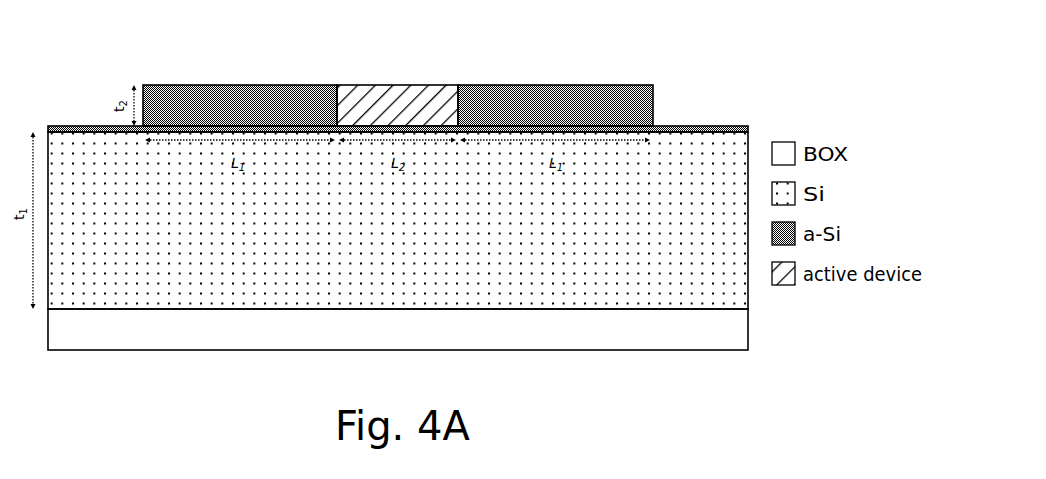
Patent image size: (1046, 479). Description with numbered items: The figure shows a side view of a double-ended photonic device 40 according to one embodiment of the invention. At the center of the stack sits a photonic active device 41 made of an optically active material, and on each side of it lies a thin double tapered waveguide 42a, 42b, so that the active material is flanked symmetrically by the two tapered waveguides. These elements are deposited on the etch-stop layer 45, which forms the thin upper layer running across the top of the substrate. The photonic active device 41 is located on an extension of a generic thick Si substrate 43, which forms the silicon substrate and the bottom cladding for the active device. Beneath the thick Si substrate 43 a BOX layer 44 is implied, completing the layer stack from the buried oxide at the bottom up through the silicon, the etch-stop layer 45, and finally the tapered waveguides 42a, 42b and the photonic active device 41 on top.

The photonic device 40 is at (458, 242).
The photonic active device 41 is at (412, 98).
The thin double tapered waveguide 42a is at (603, 100).
The thin double tapered waveguide 42b is at (277, 103).
The thick Si substrate 43 is at (713, 265).
The BOX layer 44 is at (680, 332).
The etch-stop layer 45 is at (683, 126).